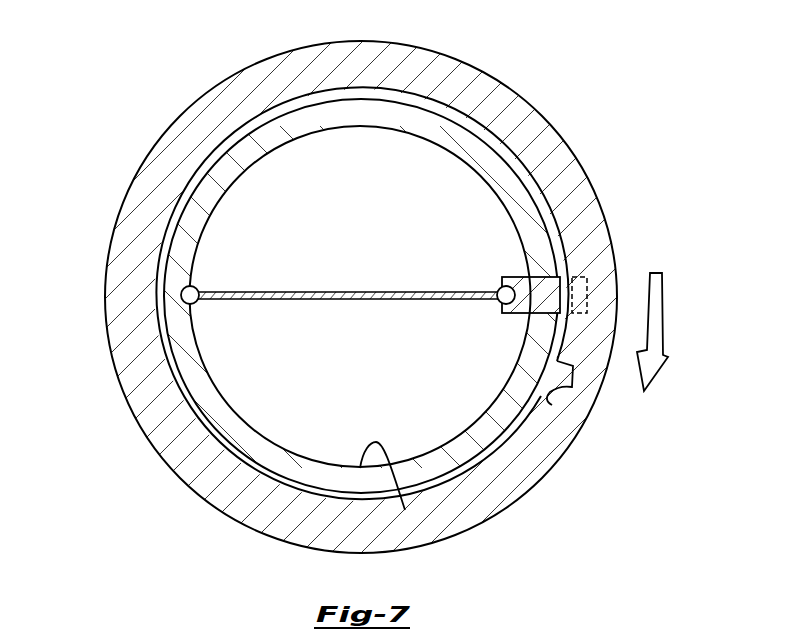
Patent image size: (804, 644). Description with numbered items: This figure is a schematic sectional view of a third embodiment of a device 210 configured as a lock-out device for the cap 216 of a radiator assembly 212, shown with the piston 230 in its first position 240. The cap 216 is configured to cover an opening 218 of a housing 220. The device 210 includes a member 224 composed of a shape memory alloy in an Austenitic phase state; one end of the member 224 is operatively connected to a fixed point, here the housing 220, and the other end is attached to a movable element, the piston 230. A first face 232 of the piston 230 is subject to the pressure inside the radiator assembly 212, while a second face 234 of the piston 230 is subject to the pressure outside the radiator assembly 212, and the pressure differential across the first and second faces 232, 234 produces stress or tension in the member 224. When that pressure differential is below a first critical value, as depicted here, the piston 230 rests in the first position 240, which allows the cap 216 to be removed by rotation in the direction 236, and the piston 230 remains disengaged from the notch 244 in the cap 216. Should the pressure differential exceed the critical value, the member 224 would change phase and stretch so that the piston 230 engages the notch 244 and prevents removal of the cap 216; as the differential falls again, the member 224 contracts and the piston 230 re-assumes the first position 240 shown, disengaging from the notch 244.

The device 210 is at (340, 245).
The radiator assembly 212 is at (155, 93).
The cap 216 is at (530, 108).
The opening 218 is at (405, 510).
The housing 220 is at (178, 318).
The member 224 is at (270, 303).
The piston 230 is at (523, 305).
The first face 232 is at (500, 282).
The second face 234 is at (575, 297).
The direction 236 is at (651, 364).
The first position 240 is at (522, 277).
The notch 244 is at (552, 405).